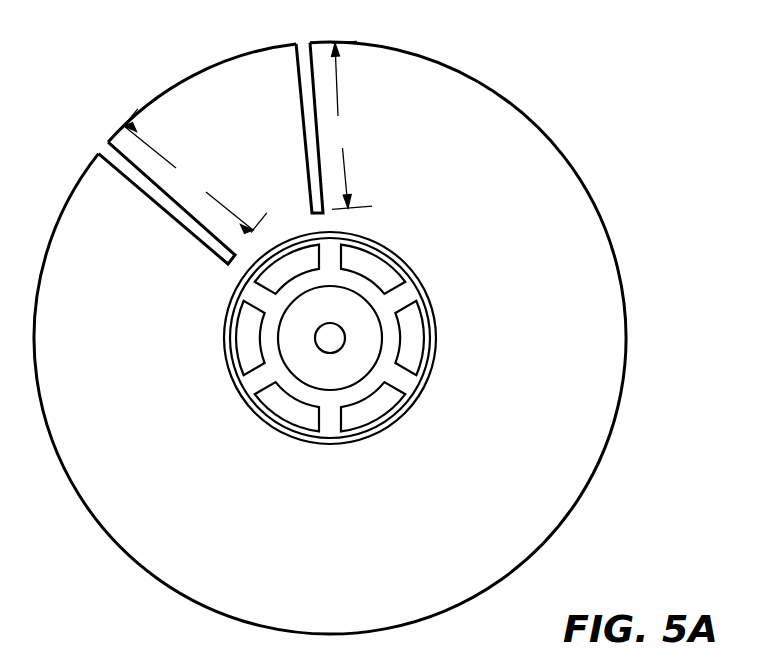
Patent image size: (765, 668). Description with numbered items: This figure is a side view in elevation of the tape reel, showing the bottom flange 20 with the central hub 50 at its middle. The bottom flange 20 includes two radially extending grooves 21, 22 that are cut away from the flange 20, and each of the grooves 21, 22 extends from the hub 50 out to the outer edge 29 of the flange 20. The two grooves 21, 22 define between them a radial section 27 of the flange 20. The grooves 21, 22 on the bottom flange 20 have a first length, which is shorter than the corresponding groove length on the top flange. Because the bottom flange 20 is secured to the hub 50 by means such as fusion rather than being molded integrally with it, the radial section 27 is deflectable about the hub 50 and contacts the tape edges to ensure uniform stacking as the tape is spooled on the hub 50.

The bottom flange 20 is at (583, 358).
The groove 21 is at (145, 188).
The groove 22 is at (310, 87).
The radial section 27 is at (163, 104).
The outer edge 29 is at (385, 45).
The hub 50 is at (383, 272).